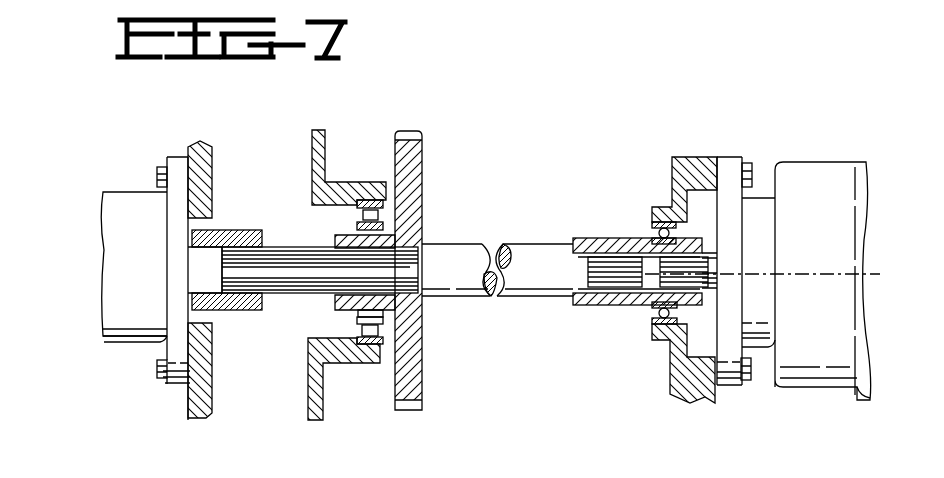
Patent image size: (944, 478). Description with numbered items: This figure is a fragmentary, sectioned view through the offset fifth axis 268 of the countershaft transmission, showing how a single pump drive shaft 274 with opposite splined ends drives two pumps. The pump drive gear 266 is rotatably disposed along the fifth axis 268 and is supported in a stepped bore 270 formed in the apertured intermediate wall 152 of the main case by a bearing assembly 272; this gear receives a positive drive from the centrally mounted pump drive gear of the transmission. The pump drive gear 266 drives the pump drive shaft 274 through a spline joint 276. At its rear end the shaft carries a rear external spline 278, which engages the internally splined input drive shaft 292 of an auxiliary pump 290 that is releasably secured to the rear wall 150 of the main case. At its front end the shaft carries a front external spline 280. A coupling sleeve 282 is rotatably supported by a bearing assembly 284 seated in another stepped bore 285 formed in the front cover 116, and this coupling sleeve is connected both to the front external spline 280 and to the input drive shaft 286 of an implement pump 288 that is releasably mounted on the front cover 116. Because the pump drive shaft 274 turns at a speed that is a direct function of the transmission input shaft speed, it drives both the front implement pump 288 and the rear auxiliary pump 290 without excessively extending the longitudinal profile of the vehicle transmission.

The auxiliary pump 290 is at (140, 193).
The rear wall 150 is at (206, 152).
The intermediate wall 152 is at (318, 142).
The pump drive gear 266 is at (405, 138).
The rear external spline 278 is at (286, 247).
The internally splined input drive shaft 292 is at (196, 237).
The spline joint 276 is at (378, 249).
The bearing assembly 272 is at (380, 326).
The stepped bore 270 is at (314, 338).
The pump drive shaft 274 is at (526, 250).
The coupling sleeve 282 is at (613, 244).
The bearing assembly 284 is at (652, 225).
The front cover 116 is at (692, 157).
The implement pump 288 is at (817, 168).
The fifth axis 268 is at (838, 270).
The input drive shaft 286 is at (690, 281).
The front external spline 280 is at (615, 272).
The stepped bore 285 is at (650, 314).